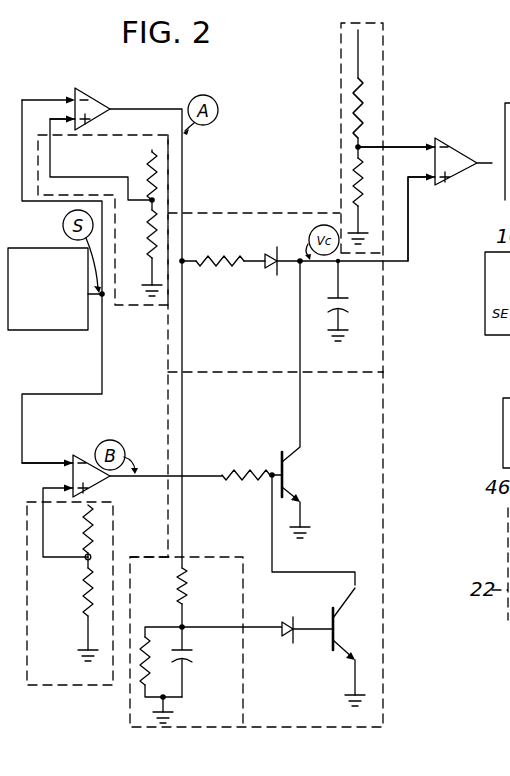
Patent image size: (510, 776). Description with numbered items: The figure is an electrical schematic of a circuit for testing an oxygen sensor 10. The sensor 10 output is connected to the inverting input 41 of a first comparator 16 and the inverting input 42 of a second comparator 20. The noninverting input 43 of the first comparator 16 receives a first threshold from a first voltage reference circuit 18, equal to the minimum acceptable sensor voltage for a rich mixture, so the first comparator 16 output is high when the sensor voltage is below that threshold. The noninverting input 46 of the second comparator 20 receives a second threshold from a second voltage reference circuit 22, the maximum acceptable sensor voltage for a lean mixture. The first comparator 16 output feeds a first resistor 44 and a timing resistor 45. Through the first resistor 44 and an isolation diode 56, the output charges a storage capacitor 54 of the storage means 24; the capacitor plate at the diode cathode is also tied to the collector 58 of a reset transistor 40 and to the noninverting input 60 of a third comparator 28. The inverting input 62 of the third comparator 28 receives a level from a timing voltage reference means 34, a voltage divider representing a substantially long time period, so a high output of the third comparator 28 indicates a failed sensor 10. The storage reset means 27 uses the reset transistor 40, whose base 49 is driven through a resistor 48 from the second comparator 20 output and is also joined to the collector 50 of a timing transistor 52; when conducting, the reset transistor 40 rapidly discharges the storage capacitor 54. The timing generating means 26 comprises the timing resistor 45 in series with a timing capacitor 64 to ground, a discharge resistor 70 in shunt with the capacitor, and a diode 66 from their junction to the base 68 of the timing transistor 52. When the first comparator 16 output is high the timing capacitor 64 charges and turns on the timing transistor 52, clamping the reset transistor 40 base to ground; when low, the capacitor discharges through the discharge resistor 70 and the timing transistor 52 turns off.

The sensor 10 is at (16, 247).
The first comparator 16 is at (101, 96).
The first voltage reference circuit 18 is at (170, 150).
The second comparator 20 is at (105, 486).
The second voltage reference circuit 22 is at (27, 685).
The storage means 24 is at (383, 306).
The timing generating means 26 is at (128, 703).
The storage reset means 27 is at (383, 502).
The third comparator 28 is at (448, 140).
The timing voltage reference means 34 is at (383, 70).
The reset transistor 40 is at (290, 481).
The inverting input 41 is at (47, 99).
The inverting input 42 is at (62, 462).
The noninverting input 43 is at (58, 118).
The first resistor 44 is at (203, 257).
The timing resistor 45 is at (186, 585).
The noninverting input 46 is at (55, 487).
The resistor 48 is at (225, 474).
The base 49 is at (272, 470).
The collector 50 is at (345, 600).
The timing transistor 52 is at (338, 630).
The storage capacitor 54 is at (339, 313).
The isolation diode 56 is at (269, 270).
The collector 58 is at (297, 449).
The noninverting input 60 is at (408, 194).
The inverting input 62 is at (400, 146).
The timing capacitor 64 is at (190, 656).
The diode 66 is at (285, 621).
The base 68 is at (312, 627).
The discharge resistor 70 is at (150, 666).